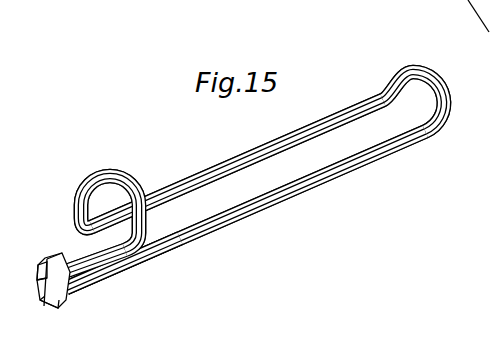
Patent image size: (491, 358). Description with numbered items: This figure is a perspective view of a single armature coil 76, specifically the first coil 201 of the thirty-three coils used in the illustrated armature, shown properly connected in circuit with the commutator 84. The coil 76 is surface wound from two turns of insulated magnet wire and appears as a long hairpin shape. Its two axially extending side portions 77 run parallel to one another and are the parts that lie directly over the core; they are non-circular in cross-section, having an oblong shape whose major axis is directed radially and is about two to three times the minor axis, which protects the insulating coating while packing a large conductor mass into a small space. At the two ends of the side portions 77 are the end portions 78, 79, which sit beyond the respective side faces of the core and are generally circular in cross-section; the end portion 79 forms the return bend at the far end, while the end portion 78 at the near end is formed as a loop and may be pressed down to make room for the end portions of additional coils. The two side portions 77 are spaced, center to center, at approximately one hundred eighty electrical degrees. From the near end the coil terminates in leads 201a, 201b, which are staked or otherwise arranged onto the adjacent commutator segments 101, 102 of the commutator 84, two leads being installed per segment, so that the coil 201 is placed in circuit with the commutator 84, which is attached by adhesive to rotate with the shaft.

The armature coil 76 is at (272, 208).
The first coil 201 is at (251, 180).
The axially extending side portions 77 is at (263, 157).
The end portion 78 is at (107, 172).
The end portion 79 is at (413, 74).
The commutator 84 is at (75, 298).
The commutator segment 101 is at (42, 305).
The commutator segment 102 is at (50, 277).
The lead of coil 201 201a is at (114, 272).
The lead of coil 201 201b is at (99, 257).